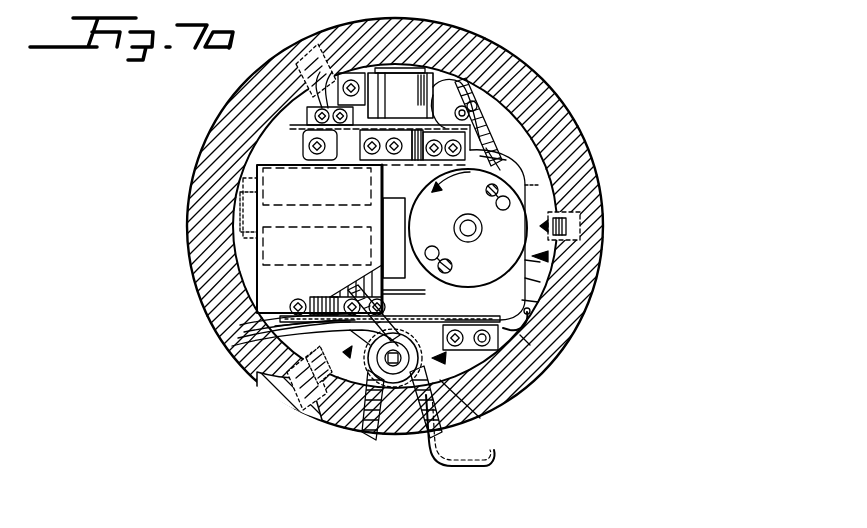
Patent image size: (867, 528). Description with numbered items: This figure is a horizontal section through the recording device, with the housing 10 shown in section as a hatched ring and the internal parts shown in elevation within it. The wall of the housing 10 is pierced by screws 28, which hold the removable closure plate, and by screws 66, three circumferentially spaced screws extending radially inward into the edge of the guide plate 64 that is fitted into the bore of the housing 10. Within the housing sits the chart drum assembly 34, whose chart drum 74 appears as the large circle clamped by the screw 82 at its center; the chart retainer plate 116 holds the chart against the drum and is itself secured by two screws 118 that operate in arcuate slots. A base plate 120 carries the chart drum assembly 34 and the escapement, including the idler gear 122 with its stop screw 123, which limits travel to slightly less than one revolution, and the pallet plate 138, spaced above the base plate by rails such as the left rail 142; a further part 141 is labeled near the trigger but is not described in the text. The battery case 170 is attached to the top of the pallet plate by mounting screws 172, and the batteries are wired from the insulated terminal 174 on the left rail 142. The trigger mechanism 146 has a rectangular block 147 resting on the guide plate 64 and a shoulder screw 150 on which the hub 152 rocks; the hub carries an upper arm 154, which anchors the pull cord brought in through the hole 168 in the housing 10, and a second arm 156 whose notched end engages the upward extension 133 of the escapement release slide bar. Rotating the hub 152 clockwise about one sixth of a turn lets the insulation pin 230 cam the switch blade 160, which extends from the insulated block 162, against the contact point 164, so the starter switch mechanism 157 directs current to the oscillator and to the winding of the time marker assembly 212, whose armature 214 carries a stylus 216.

The housing 10 is at (548, 112).
The screws 28 is at (250, 218).
The chart drum assembly 34 is at (548, 257).
The guide plate 64 is at (542, 204).
The screws 66 is at (318, 70).
The chart drum 74 is at (528, 266).
The screw 82 is at (472, 234).
The chart retainer plate 116 is at (528, 282).
The screws 118 is at (510, 200).
The base plate 120 is at (524, 300).
The idler gear 122 is at (372, 176).
The stop screw 123 is at (454, 179).
The upward extension 133 is at (422, 290).
The pallet plate 138 is at (375, 240).
The spring 141 is at (340, 418).
The left rail 142 is at (492, 132).
The trigger mechanism 146 is at (352, 452).
The rectangular block 147 is at (444, 358).
The shoulder screw 150 is at (393, 362).
The hub 152 is at (372, 433).
The arm 154 is at (262, 354).
The arm 156 is at (345, 290).
The starter switch mechanism 157 is at (532, 345).
The switch blade 160 is at (278, 326).
The insulated block 162 is at (530, 322).
The contact point 164 is at (272, 336).
The hole 168 is at (470, 425).
The battery case 170 is at (270, 303).
The mounting screws 172 is at (316, 146).
The insulated terminal 174 is at (440, 68).
The time marker assembly 212 is at (460, 80).
The armature 214 is at (508, 160).
The stylus 216 is at (498, 150).
The insulation pin 230 is at (329, 365).